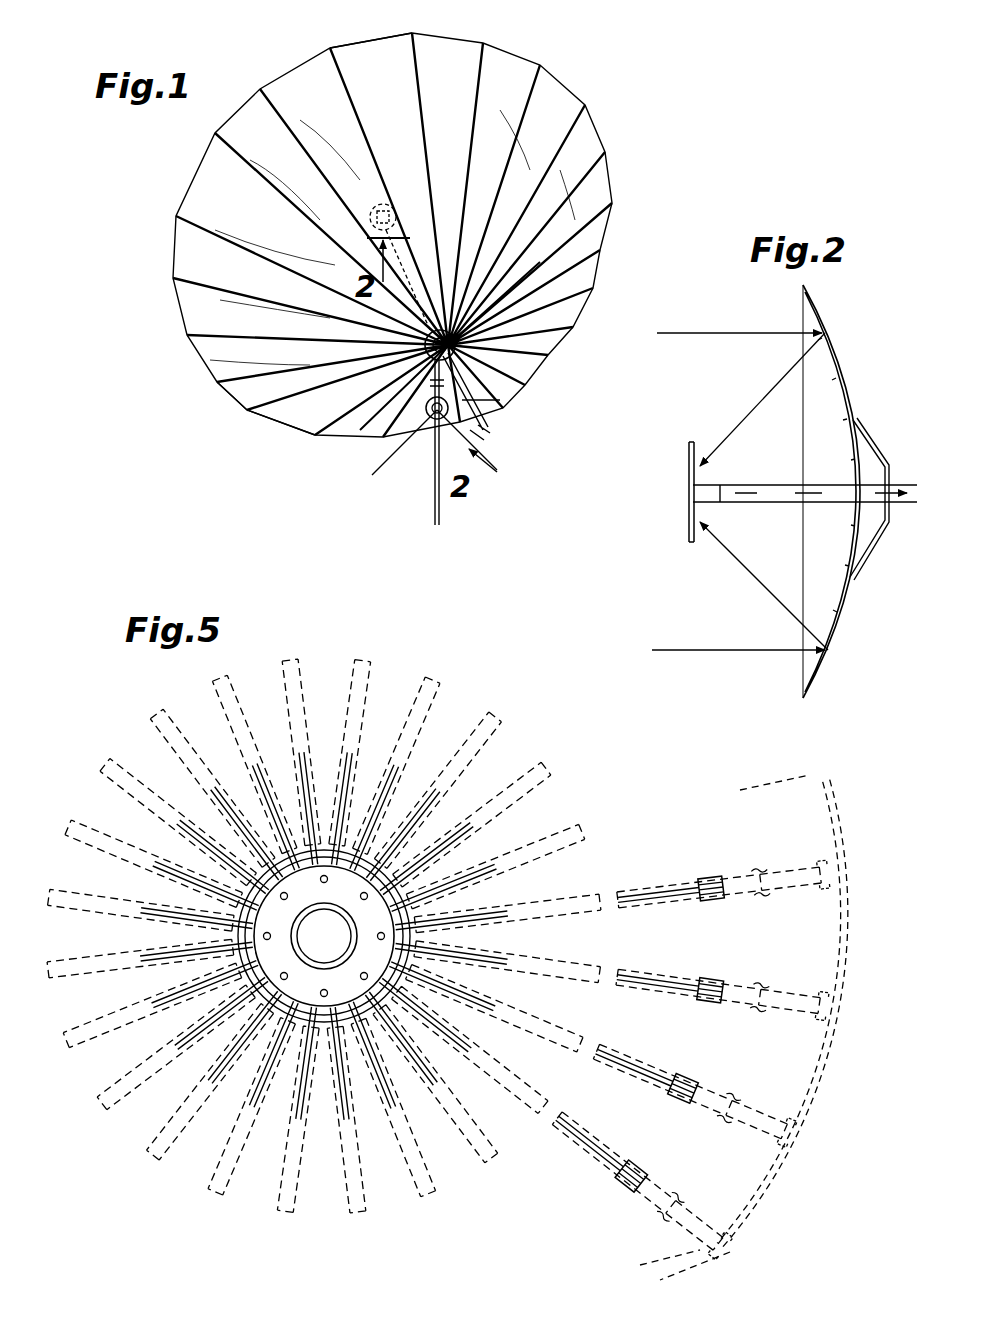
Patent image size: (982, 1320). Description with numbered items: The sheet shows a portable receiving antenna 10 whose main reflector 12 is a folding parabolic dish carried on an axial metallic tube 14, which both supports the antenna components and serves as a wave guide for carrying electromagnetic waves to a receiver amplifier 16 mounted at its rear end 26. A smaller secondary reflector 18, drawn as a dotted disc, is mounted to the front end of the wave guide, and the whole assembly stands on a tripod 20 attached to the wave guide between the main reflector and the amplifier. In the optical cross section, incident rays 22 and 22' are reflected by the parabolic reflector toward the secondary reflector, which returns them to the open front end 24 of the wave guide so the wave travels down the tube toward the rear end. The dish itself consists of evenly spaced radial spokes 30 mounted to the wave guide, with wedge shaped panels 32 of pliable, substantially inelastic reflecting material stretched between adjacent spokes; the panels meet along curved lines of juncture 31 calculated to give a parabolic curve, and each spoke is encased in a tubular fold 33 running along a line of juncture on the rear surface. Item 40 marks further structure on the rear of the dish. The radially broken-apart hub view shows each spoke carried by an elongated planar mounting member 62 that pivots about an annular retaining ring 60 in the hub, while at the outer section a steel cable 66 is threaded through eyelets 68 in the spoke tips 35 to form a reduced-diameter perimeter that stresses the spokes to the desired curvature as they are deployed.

In FIG. 1, the receiving antenna 10 is at (614, 167).
In FIG. 1, the main reflector 12 is at (166, 251).
In FIG. 2, the main reflector 12 is at (832, 343).
In FIG. 1, the axial metallic tube 14 is at (468, 362).
In FIG. 2, the axial metallic tube 14 is at (762, 503).
In FIG. 1, the receiver amplifier 16 is at (455, 405).
In FIG. 1, the secondary reflector 18 is at (370, 212).
In FIG. 2, the secondary reflector 18 is at (690, 522).
In FIG. 1, the tripod 20 is at (378, 468).
In FIG. 2, the incident ray 22 is at (740, 399).
In FIG. 2, the incident ray 22' is at (740, 586).
In FIG. 1, the open front end 24 is at (405, 196).
In FIG. 2, the open front end 24 is at (730, 485).
In FIG. 2, the rear end 26 is at (898, 492).
In FIG. 1, the radial spoke 30 is at (430, 66).
In FIG. 5, the radial spoke 30 is at (368, 676).
In FIG. 1, the line of juncture 31 is at (356, 38).
In FIG. 1, the wedge shaped panel 32 is at (235, 115).
In FIG. 5, the wedge shaped panel 32 is at (828, 944).
In FIG. 1, the tubular fold 33 is at (248, 395).
In FIG. 5, the spoke tip 35 is at (835, 888).
In FIG. 1, the rib support 40 is at (525, 265).
In FIG. 5, the annular retaining ring 60 is at (410, 940).
In FIG. 5, the mounting member 62 is at (392, 812).
In FIG. 5, the cable 66 is at (812, 800).
In FIG. 5, the eyelet 68 is at (830, 878).